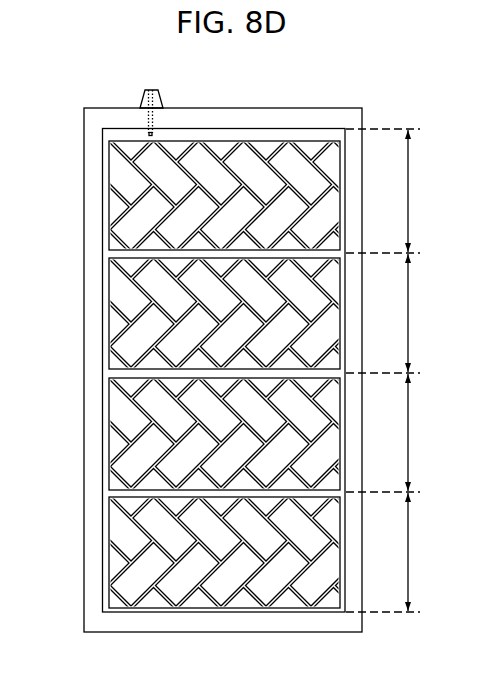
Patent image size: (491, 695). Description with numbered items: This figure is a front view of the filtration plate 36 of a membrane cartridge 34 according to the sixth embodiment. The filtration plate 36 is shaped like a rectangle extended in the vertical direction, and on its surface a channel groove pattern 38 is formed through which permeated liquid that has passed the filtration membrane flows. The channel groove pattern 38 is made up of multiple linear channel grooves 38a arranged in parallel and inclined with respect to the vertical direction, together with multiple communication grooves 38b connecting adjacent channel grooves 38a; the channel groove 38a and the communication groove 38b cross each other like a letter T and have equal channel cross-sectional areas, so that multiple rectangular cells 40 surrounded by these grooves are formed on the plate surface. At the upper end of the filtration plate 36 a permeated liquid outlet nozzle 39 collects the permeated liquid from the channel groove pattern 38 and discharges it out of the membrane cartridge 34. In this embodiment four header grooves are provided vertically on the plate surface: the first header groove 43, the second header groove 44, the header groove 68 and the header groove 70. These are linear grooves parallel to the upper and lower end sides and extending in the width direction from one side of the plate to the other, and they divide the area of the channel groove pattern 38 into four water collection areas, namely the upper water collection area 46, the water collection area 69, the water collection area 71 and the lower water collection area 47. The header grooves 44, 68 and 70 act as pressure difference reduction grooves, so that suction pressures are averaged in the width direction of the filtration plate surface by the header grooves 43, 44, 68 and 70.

The membrane cartridge 34 is at (309, 106).
The filtration plate 36 is at (85, 444).
The channel groove pattern 38 is at (328, 206).
The channel groove 38a is at (220, 592).
The communication groove 38b is at (150, 580).
The permeated liquid outlet nozzle 39 is at (161, 100).
The rectangular cell 40 is at (160, 216).
The first header groove 43 is at (240, 135).
The second header groove 44 is at (122, 517).
The upper water collection area 46 is at (393, 191).
The lower water collection area 47 is at (393, 552).
The header groove 68 is at (118, 283).
The water collection area 69 is at (393, 313).
The header groove 70 is at (153, 367).
The water collection area 71 is at (394, 433).